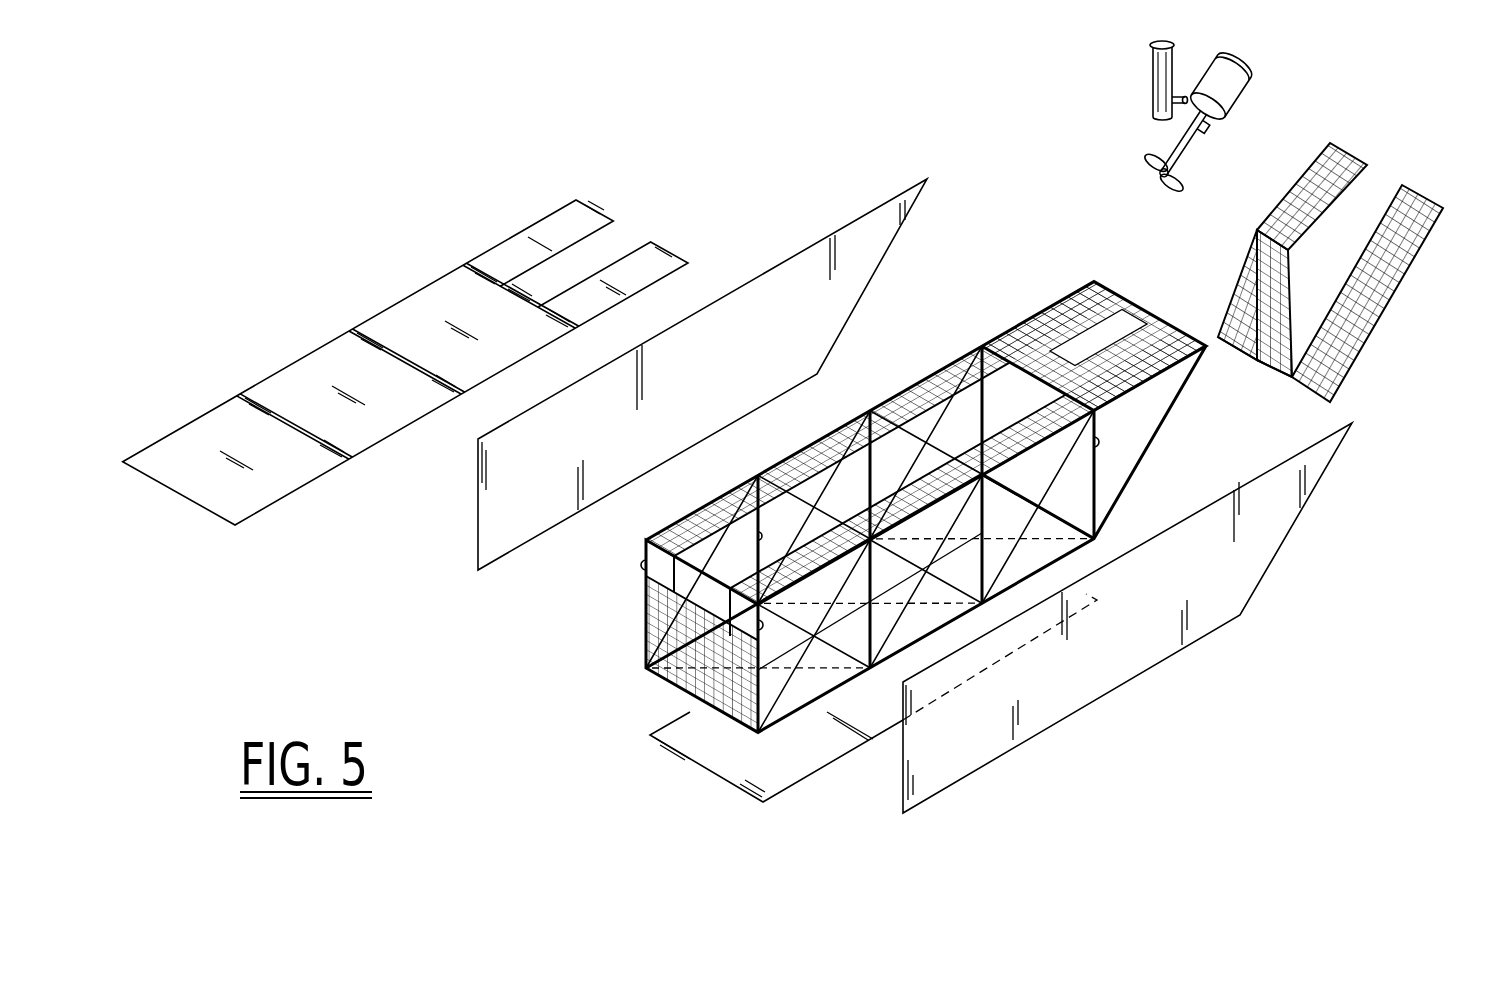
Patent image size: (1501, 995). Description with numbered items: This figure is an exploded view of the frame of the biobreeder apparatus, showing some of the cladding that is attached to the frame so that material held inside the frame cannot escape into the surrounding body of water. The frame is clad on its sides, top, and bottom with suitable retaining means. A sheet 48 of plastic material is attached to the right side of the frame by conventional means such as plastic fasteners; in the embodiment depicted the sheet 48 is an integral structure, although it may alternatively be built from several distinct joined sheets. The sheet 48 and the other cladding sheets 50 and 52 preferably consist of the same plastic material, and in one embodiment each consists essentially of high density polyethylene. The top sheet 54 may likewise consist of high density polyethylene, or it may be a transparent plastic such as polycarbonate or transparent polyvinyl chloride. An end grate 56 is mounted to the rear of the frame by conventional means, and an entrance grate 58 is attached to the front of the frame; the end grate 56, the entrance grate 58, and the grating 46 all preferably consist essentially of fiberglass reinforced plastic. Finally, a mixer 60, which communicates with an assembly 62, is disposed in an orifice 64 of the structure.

The grating 46 is at (1037, 323).
The sheet 48 is at (970, 753).
The cladding sheet 50 is at (748, 770).
The cladding sheet 52 is at (562, 417).
The top sheet 54 is at (548, 215).
The end grate 56 is at (645, 623).
The entrance grate 58 is at (1420, 192).
The mixer 60 is at (1239, 106).
The assembly 62 is at (1152, 92).
The orifice 64 is at (1094, 340).